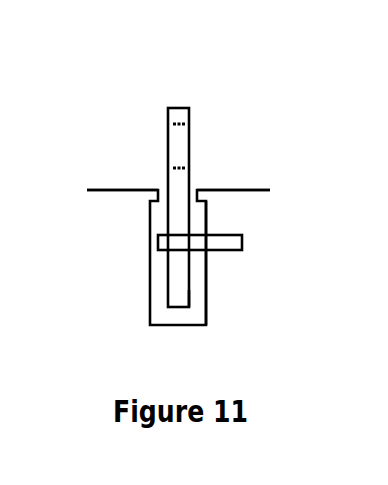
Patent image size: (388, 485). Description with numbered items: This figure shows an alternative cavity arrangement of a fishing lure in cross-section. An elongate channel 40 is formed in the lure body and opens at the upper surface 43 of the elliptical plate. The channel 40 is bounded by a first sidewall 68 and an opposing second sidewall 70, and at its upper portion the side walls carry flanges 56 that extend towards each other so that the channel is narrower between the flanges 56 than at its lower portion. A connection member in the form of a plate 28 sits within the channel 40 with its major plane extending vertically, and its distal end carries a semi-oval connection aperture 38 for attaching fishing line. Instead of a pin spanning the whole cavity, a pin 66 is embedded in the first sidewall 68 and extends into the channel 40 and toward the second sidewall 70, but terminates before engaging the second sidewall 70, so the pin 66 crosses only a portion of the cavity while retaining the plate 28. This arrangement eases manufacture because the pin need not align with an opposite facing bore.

The plate 28 is at (176, 97).
The connection aperture 38 is at (200, 142).
The upper surface 43 is at (257, 190).
The flanges 56 is at (154, 181).
The pin 66 is at (256, 240).
The first sidewall 68 is at (222, 272).
The second sidewall 70 is at (143, 283).
The channel 40 is at (195, 309).